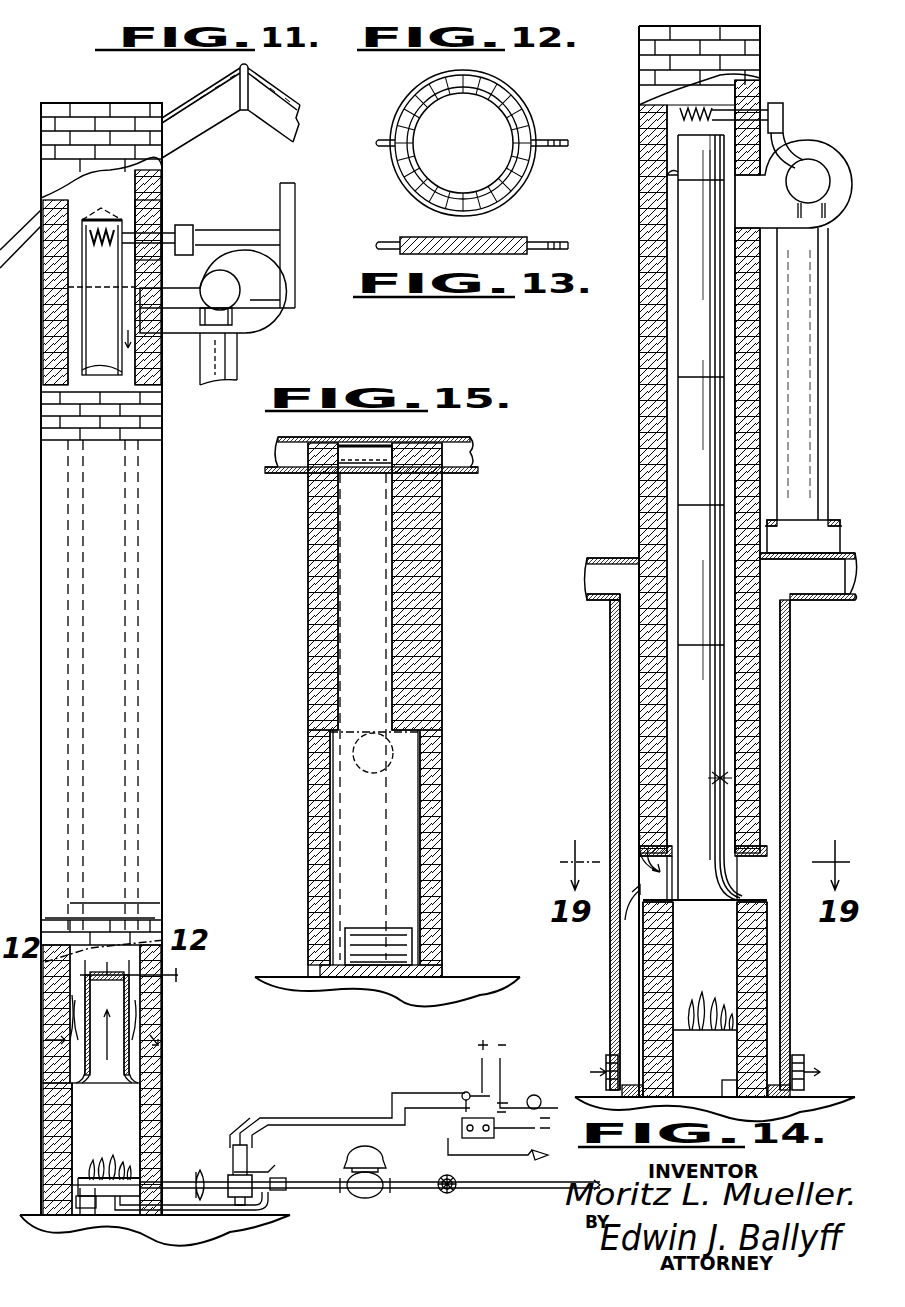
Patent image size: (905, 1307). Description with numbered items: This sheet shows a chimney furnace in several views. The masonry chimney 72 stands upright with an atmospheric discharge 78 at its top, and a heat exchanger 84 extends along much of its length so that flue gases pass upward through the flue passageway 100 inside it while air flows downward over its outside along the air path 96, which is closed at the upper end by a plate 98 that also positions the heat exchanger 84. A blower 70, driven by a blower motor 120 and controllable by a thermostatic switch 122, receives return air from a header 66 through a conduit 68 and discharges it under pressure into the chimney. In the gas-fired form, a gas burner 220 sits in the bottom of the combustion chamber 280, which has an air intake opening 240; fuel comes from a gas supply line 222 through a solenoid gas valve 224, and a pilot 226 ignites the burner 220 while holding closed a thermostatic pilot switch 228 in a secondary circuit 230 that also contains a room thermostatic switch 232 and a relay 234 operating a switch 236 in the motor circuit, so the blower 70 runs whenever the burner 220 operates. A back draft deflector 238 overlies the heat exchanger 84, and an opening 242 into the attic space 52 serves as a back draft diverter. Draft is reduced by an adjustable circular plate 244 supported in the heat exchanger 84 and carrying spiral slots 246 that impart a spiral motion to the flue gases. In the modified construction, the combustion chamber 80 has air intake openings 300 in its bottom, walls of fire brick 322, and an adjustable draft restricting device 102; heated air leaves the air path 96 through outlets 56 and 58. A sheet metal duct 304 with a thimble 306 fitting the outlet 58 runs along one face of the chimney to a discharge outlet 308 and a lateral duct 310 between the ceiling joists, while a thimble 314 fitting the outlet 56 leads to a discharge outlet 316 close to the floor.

In FIG. 11, the atmospheric discharge 78 is at (75, 112).
In FIG. 14, the atmospheric discharge 78 is at (748, 26).
In FIG. 11, the attic space 52 is at (255, 155).
In FIG. 11, the opening 242 is at (152, 208).
In FIG. 11, the back draft deflector 238 is at (109, 212).
In FIG. 11, the thermostatic switch 122 is at (186, 225).
In FIG. 14, the thermostatic switch 122 is at (778, 103).
In FIG. 11, the blower motor 120 is at (210, 297).
In FIG. 14, the blower motor 120 is at (812, 166).
In FIG. 11, the blower 70 is at (246, 318).
In FIG. 14, the blower 70 is at (810, 144).
In FIG. 11, the masonry chimney 72 is at (155, 745).
In FIG. 15, the masonry chimney 72 is at (420, 566).
In FIG. 14, the masonry chimney 72 is at (755, 725).
In FIG. 11, the adjustable circular plate 244 is at (170, 968).
In FIG. 12, the adjustable circular plate 244 is at (410, 192).
In FIG. 11, the heat exchanger 84 is at (130, 998).
In FIG. 12, the heat exchanger 84 is at (533, 122).
In FIG. 14, the heat exchanger 84 is at (715, 815).
In FIG. 11, the combustion chamber 280 is at (120, 1120).
In FIG. 11, the secondary circuit 230 is at (355, 1118).
In FIG. 11, the relay 234 is at (462, 1090).
In FIG. 11, the switch 236 is at (492, 1086).
In FIG. 11, the thermostatic pilot switch 228 is at (278, 1178).
In FIG. 11, the room thermostatic switch 232 is at (533, 1154).
In FIG. 11, the gas supply line 222 is at (330, 1195).
In FIG. 11, the solenoid gas valve 224 is at (245, 1205).
In FIG. 11, the pilot 226 is at (155, 1215).
In FIG. 11, the gas burner 220 is at (105, 1215).
In FIG. 11, the air intake opening 240 is at (85, 1222).
In FIG. 13, the spiral slots 246 is at (495, 238).
In FIG. 15, the lateral duct 310 is at (370, 446).
In FIG. 14, the lateral duct 310 is at (585, 590).
In FIG. 15, the sheet metal duct 304 is at (370, 665).
In FIG. 14, the sheet metal duct 304 is at (612, 662).
In FIG. 15, the thimble 306 is at (370, 773).
In FIG. 14, the thimble 306 is at (685, 905).
In FIG. 15, the discharge outlet 308 is at (405, 950).
In FIG. 14, the discharge outlet 308 is at (604, 1057).
In FIG. 14, the flue passageway 100 is at (718, 98).
In FIG. 14, the plate 98 is at (665, 178).
In FIG. 14, the conduit 68 is at (825, 362).
In FIG. 14, the header 66 is at (830, 530).
In FIG. 14, the air path 96 is at (732, 690).
In FIG. 14, the adjustable draft restricting device 102 is at (752, 760).
In FIG. 14, the outlet 56 is at (775, 855).
In FIG. 14, the thimble 314 is at (800, 845).
In FIG. 14, the outlet 58 is at (622, 862).
In FIG. 14, the fire brick 322 is at (765, 960).
In FIG. 14, the combustion chamber 80 is at (740, 982).
In FIG. 14, the discharge outlet 316 is at (805, 1060).
In FIG. 14, the air intake openings 300 is at (732, 1090).